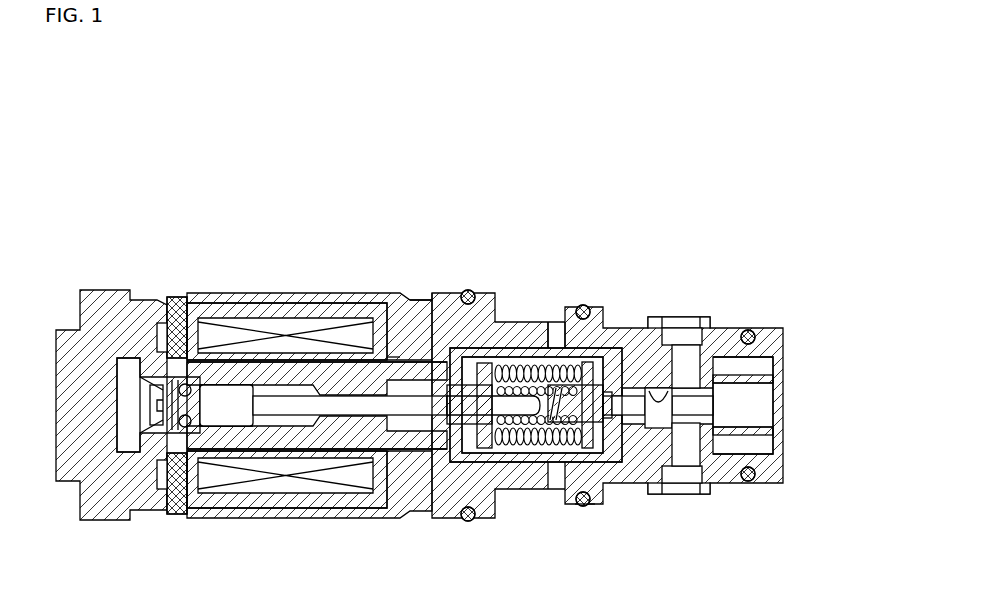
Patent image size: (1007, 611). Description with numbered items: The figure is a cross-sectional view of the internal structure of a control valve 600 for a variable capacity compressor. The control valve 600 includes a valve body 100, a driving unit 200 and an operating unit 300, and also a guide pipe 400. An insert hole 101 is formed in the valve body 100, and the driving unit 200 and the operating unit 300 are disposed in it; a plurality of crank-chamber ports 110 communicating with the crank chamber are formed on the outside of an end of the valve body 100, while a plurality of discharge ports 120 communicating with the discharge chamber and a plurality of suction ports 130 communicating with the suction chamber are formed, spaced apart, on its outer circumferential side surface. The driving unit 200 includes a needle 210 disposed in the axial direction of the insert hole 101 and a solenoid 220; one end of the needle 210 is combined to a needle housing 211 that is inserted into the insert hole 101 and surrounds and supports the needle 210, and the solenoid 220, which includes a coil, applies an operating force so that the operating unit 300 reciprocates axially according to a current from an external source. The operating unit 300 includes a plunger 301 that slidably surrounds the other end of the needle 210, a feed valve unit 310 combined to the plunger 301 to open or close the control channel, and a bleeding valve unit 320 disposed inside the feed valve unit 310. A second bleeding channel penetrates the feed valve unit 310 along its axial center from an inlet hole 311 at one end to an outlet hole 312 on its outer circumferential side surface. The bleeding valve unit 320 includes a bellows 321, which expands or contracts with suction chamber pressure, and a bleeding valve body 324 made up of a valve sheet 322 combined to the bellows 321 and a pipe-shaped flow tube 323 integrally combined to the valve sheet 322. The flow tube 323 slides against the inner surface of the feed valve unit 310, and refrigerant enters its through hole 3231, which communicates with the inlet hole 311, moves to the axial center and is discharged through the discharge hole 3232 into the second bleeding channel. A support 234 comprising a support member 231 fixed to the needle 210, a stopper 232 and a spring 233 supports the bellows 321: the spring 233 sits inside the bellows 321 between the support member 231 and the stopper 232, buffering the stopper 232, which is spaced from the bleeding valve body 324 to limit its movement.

The control valve 600 is at (801, 96).
The valve body 100 is at (157, 286).
The insert hole 101 is at (130, 382).
The crank-chamber ports 110 is at (786, 358).
The discharge ports 120 is at (710, 318).
The suction ports 130 is at (495, 520).
The driving unit 200 is at (338, 213).
The needle 210 is at (300, 332).
The needle housing 211 is at (215, 366).
The solenoid 220 is at (345, 335).
The support member 231 is at (412, 300).
The stopper 232 is at (548, 345).
The spring 233 is at (468, 290).
The support 234 is at (527, 208).
The operating unit 300 is at (688, 120).
The plunger 301 is at (360, 435).
The feed valve unit 310 is at (580, 350).
The inlet hole 311 is at (757, 412).
The outlet hole 312 is at (560, 356).
The bleeding valve unit 320 is at (727, 160).
The bellows 321 is at (592, 364).
The valve sheet 322 is at (612, 382).
The flow tube 323 is at (648, 384).
The bleeding valve body 324 is at (758, 203).
The through hole 3231 is at (661, 416).
The discharge hole 3232 is at (630, 440).
The guide pipe 400 is at (262, 458).